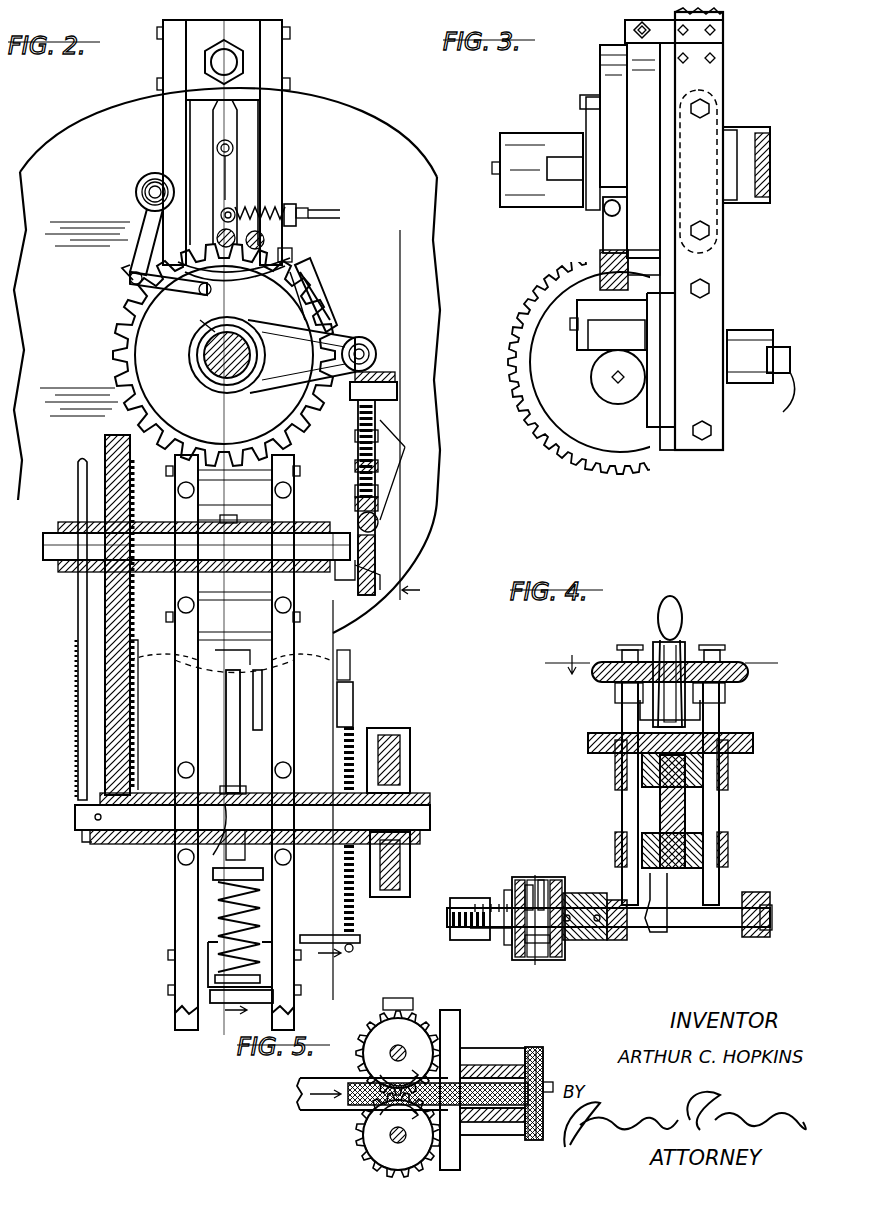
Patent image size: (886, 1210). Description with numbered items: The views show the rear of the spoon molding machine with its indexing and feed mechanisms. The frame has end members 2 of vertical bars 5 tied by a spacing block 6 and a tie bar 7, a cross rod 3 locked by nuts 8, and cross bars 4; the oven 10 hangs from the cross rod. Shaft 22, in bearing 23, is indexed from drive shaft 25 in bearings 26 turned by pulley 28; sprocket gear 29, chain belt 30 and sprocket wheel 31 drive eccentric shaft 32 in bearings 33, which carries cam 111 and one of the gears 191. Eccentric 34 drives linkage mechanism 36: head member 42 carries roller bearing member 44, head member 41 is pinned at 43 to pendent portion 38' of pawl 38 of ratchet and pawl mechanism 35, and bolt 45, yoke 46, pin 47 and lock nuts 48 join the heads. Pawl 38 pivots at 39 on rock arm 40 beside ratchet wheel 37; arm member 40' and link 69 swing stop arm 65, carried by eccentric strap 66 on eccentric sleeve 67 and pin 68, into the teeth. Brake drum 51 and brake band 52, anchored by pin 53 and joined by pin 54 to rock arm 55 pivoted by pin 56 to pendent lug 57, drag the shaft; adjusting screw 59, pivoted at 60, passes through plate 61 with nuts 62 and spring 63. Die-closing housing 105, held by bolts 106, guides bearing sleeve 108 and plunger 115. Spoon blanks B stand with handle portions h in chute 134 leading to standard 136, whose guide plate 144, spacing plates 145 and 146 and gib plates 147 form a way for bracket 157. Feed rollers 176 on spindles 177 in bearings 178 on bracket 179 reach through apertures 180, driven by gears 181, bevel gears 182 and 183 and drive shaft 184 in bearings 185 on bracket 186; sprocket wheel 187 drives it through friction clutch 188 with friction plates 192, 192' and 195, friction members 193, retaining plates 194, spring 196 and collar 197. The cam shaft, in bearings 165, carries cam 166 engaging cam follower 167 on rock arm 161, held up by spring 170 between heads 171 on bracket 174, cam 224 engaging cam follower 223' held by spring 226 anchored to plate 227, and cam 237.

In FIG. 2, the end members 2 is at (283, 70).
In FIG. 3, the end members 2 is at (724, 94).
In FIG. 2, the cross rod 3 is at (229, 64).
In FIG. 2, the cross bars 4 is at (275, 962).
In FIG. 4, the bars 5 is at (660, 663).
In FIG. 2, the spacing block 6 is at (190, 64).
In FIG. 2, the tie bar 7 is at (225, 842).
In FIG. 2, the nuts 8 is at (238, 62).
In FIG. 2, the housing or oven 10 is at (372, 150).
In FIG. 2, the shaft 22 is at (222, 375).
In FIG. 3, the shaft 22 is at (755, 152).
In FIG. 3, the bearing 23 is at (718, 222).
In FIG. 2, the drive shaft 25 is at (152, 832).
In FIG. 2, the bearings 26 is at (302, 796).
In FIG. 2, the pulley 28 is at (405, 748).
In FIG. 2, the sprocket gear 29 is at (88, 842).
In FIG. 2, the chain belt 30 is at (78, 772).
In FIG. 2, the sprocket wheel 31 is at (78, 613).
In FIG. 2, the eccentric shaft 32 is at (160, 548).
In FIG. 2, the bearings 33 is at (165, 522).
In FIG. 3, the bearings 33 is at (663, 355).
In FIG. 2, the eccentric 34 is at (352, 580).
In FIG. 2, the ratchet and pawl mechanism 35 is at (285, 296).
In FIG. 2, the linkage mechanism 36 is at (403, 470).
In FIG. 2, the ratchet wheel 37 is at (127, 368).
In FIG. 3, the ratchet wheel 37 is at (600, 66).
In FIG. 2, the pawl 38 is at (332, 295).
In FIG. 3, the pawl 38 is at (611, 150).
In FIG. 2, the pendent portion 38' is at (406, 366).
In FIG. 3, the pendent portion 38' is at (657, 195).
In FIG. 2, the pivot 39 is at (366, 340).
In FIG. 3, the pivot 39 is at (537, 170).
In FIG. 2, the rock arm 40 is at (301, 364).
In FIG. 3, the rock arm 40 is at (576, 164).
In FIG. 2, the arm member 40' is at (187, 331).
In FIG. 3, the arm member 40' is at (569, 110).
In FIG. 2, the head member 41 is at (358, 430).
In FIG. 2, the head member 42 is at (378, 538).
In FIG. 3, the head member 42 is at (600, 350).
In FIG. 2, the pin 43 is at (397, 391).
In FIG. 3, the pin 43 is at (606, 220).
In FIG. 2, the roller bearing member 44 is at (372, 580).
In FIG. 2, the bolt 45 is at (360, 466).
In FIG. 3, the bolt 45 is at (606, 280).
In FIG. 2, the yoke 46 is at (380, 502).
In FIG. 3, the yoke 46 is at (582, 312).
In FIG. 2, the pin 47 is at (380, 518).
In FIG. 3, the pin 47 is at (574, 336).
In FIG. 2, the lock nuts 48 is at (358, 446).
In FIG. 2, the brake drum 51 is at (262, 278).
In FIG. 2, the brake band 52 is at (292, 253).
In FIG. 3, the brake band 52 is at (660, 258).
In FIG. 2, the pin 53 is at (264, 240).
In FIG. 3, the pin 53 is at (668, 74).
In FIG. 2, the pin 54 is at (218, 238).
In FIG. 2, the rock arm 55 is at (230, 170).
In FIG. 2, the pin 56 is at (238, 143).
In FIG. 2, the pendent lug 57 is at (213, 120).
In FIG. 2, the adjusting screw 59 is at (306, 210).
In FIG. 3, the adjusting screw 59 is at (638, 36).
In FIG. 2, the pivot 60 is at (222, 212).
In FIG. 2, the plate 61 is at (290, 204).
In FIG. 3, the plate 61 is at (630, 30).
In FIG. 2, the nuts 62 is at (336, 212).
In FIG. 2, the spring 63 is at (248, 208).
In FIG. 2, the stop arm 65 is at (132, 262).
In FIG. 2, the eccentric strap 66 is at (150, 186).
In FIG. 2, the eccentric sleeve 67 is at (148, 185).
In FIG. 2, the pin 68 is at (137, 241).
In FIG. 2, the link 69 is at (180, 295).
In FIG. 3, the tubular housing member 105 is at (748, 375).
In FIG. 3, the bolts 106 is at (710, 288).
In FIG. 3, the bearing sleeve 108 is at (770, 345).
In FIG. 2, the cam 111 is at (237, 562).
In FIG. 3, the plunger 115 is at (776, 404).
In FIG. 4, the chute or magazine 134 is at (655, 650).
In FIG. 5, the chute or magazine 134 is at (305, 1100).
In FIG. 5, the standard 136 is at (505, 1134).
In FIG. 5, the guide plate 144 is at (528, 1062).
In FIG. 5, the spacing plates 145 is at (531, 1048).
In FIG. 5, the spacing plates 146 is at (538, 1050).
In FIG. 5, the gib plates 147 is at (543, 1062).
In FIG. 5, the bracket 157 is at (550, 1082).
In FIG. 2, the rock arm 161 is at (213, 852).
In FIG. 2, the bearings 165 is at (154, 698).
In FIG. 2, the cam 166 is at (228, 740).
In FIG. 2, the cam follower 167 is at (226, 787).
In FIG. 2, the spring 170 is at (218, 912).
In FIG. 2, the heads 171 is at (262, 874).
In FIG. 2, the bracket 174 is at (212, 1003).
In FIG. 4, the feed rollers 176 is at (602, 662).
In FIG. 5, the feed rollers 176 is at (385, 1035).
In FIG. 4, the spindles 177 is at (630, 805).
In FIG. 5, the spindles 177 is at (400, 1095).
In FIG. 4, the bearings 178 is at (728, 762).
In FIG. 4, the bracket 179 is at (680, 868).
In FIG. 4, the apertures 180 is at (688, 655).
In FIG. 5, the apertures 180 is at (370, 1080).
In FIG. 4, the gears 181 is at (742, 745).
In FIG. 5, the gears 181 is at (416, 1020).
In FIG. 4, the bevel gear 182 is at (660, 928).
In FIG. 4, the bevel gear 183 is at (612, 941).
In FIG. 4, the drive shaft 184 is at (724, 928).
In FIG. 4, the bearings 185 is at (582, 941).
In FIG. 5, the bracket 186 is at (442, 1032).
In FIG. 4, the sprocket wheel 187 is at (540, 878).
In FIG. 4, the friction clutch mechanism 188 is at (522, 882).
In FIG. 2, the intermeshing gears 191 is at (133, 665).
In FIG. 3, the intermeshing gears 191 is at (645, 445).
In FIG. 4, the friction plate 192 is at (558, 914).
In FIG. 4, the friction plate 192' is at (488, 906).
In FIG. 4, the friction members 193 is at (548, 960).
In FIG. 4, the retaining plate 194 is at (552, 886).
In FIG. 4, the friction plates 195 is at (530, 960).
In FIG. 4, the spring 196 is at (496, 942).
In FIG. 4, the collar 197 is at (465, 936).
In FIG. 2, the pendent portion 223' is at (368, 665).
In FIG. 2, the cam 224 is at (353, 705).
In FIG. 2, the spring 226 is at (355, 905).
In FIG. 2, the plate 227 is at (360, 939).
In FIG. 2, the cam 237 is at (262, 706).
In FIG. 4, the spoon blanks B is at (676, 620).
In FIG. 5, the spoon blanks B is at (362, 1114).
In FIG. 4, the handle portions h is at (662, 715).